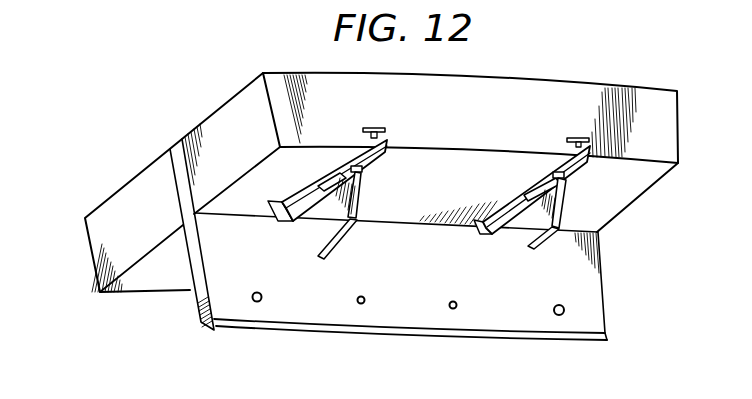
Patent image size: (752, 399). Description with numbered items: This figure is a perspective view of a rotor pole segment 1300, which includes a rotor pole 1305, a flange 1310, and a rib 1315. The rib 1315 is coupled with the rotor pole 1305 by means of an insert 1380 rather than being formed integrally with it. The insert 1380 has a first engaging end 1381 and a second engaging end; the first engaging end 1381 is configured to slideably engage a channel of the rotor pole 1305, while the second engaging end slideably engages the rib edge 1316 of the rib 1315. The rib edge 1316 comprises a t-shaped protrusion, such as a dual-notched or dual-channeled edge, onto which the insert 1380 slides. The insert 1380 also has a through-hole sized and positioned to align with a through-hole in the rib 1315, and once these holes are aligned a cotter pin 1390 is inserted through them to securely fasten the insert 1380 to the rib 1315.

The rotor pole segment 1300 is at (131, 126).
The rotor pole 1305 is at (588, 92).
The flange 1310 is at (589, 290).
The rib 1315 is at (329, 216).
The rib edge 1316 is at (538, 222).
The insert 1380 is at (297, 218).
The first engaging end 1381 is at (504, 222).
The cotter pin 1390 is at (292, 210).